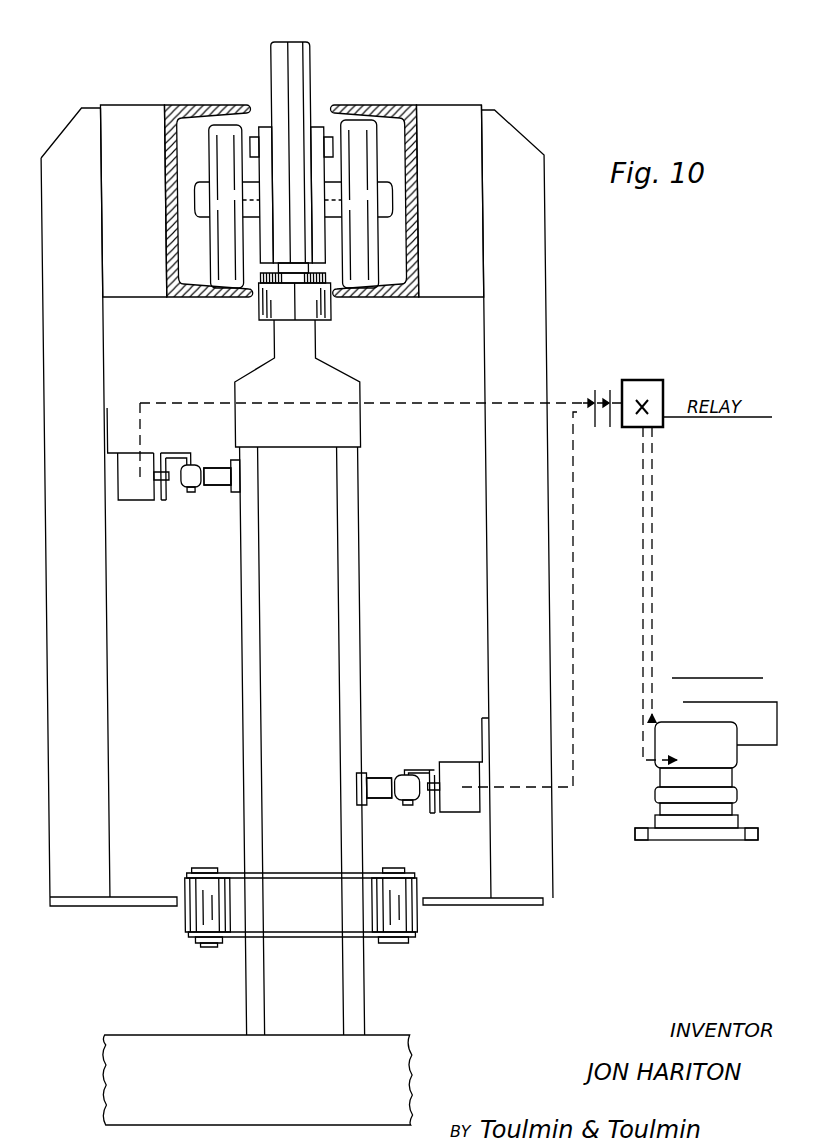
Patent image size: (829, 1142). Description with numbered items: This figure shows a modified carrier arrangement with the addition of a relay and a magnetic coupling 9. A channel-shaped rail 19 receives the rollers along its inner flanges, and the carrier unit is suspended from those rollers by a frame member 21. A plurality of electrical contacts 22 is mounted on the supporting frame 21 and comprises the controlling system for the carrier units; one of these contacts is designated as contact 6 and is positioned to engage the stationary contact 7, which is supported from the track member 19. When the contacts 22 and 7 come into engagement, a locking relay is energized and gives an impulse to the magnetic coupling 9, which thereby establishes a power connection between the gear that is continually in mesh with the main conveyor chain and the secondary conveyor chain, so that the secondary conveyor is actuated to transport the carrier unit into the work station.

The rail 19 is at (75, 380).
The frame member 21 is at (278, 657).
The stationary contact 7 is at (185, 490).
The electrical contacts 22 is at (215, 486).
The contact 6 is at (291, 633).
The magnetic coupling 9 is at (700, 840).